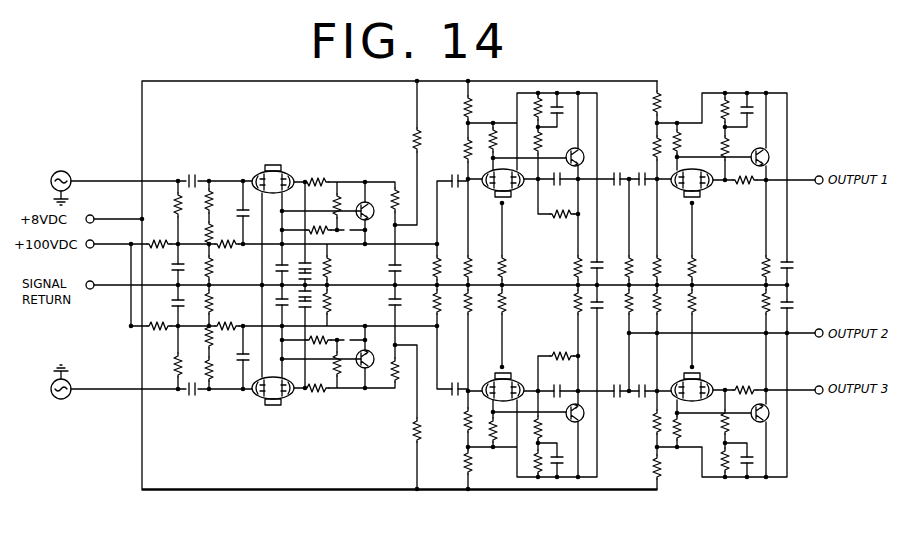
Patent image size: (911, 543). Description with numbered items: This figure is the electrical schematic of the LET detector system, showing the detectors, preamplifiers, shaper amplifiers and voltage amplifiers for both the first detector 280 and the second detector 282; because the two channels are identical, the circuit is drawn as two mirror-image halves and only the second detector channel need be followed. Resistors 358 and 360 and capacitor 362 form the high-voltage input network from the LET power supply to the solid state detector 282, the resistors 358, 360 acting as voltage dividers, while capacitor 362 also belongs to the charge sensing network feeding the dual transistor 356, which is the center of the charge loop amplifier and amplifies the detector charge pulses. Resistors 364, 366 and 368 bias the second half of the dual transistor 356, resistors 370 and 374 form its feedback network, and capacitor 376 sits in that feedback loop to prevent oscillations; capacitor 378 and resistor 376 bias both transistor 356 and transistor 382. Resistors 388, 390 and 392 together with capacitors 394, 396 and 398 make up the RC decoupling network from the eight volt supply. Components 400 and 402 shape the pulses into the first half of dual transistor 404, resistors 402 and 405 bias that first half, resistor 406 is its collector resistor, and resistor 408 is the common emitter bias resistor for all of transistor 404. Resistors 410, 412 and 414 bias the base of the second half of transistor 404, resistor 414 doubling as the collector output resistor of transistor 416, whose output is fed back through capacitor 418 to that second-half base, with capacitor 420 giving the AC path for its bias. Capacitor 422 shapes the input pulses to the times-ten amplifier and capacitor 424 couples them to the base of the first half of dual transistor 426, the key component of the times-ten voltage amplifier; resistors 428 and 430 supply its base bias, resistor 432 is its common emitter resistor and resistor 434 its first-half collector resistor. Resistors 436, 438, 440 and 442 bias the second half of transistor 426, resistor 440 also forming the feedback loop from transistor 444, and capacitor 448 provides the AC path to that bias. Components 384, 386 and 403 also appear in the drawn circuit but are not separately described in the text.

The first detector 280 is at (66, 384).
The second detector 282 is at (66, 174).
The dual transistor 356 is at (272, 168).
The resistor 358 is at (165, 285).
The resistor 360 is at (165, 276).
The capacitor 362 is at (210, 165).
The bias resistor 364 is at (316, 178).
The bias resistor 366 is at (336, 302).
The bias resistor 368 is at (396, 194).
The resistor 370 is at (222, 287).
The resistor 374 is at (217, 298).
The capacitor 376 is at (217, 270).
The capacitor 378 is at (222, 286).
The transistor 382 is at (352, 430).
The resistor 384 is at (338, 196).
The resistor 386 is at (309, 262).
The resistor 388 is at (414, 136).
The resistor 390 is at (463, 98).
The resistor 392 is at (652, 104).
The capacitor 394 is at (392, 258).
The capacitor 396 is at (607, 273).
The capacitor 398 is at (790, 266).
The pulse shaper 400 is at (408, 301).
The pulse shaper 402 is at (434, 176).
The resistor 403 is at (448, 152).
The dual transistor 404 is at (500, 196).
The resistor 405 is at (470, 300).
The collector resistor 406 is at (508, 136).
The emitter bias resistor 408 is at (506, 292).
The resistor 410 is at (536, 102).
The resistor 412 is at (554, 285).
The resistor 414 is at (570, 270).
The transistor 416 is at (582, 144).
The capacitor 418 is at (557, 285).
The capacitor 420 is at (560, 104).
The capacitor 422 is at (616, 174).
The capacitor 424 is at (634, 290).
The dual transistor 426 is at (696, 200).
The resistor 428 is at (650, 148).
The resistor 430 is at (658, 298).
The common emitter resistor 432 is at (696, 274).
The collector resistor 434 is at (680, 132).
The resistor 436 is at (732, 102).
The resistor 438 is at (730, 146).
The resistor 440 is at (744, 186).
The resistor 442 is at (760, 298).
The transistor 444 is at (774, 154).
The capacitor 448 is at (754, 112).